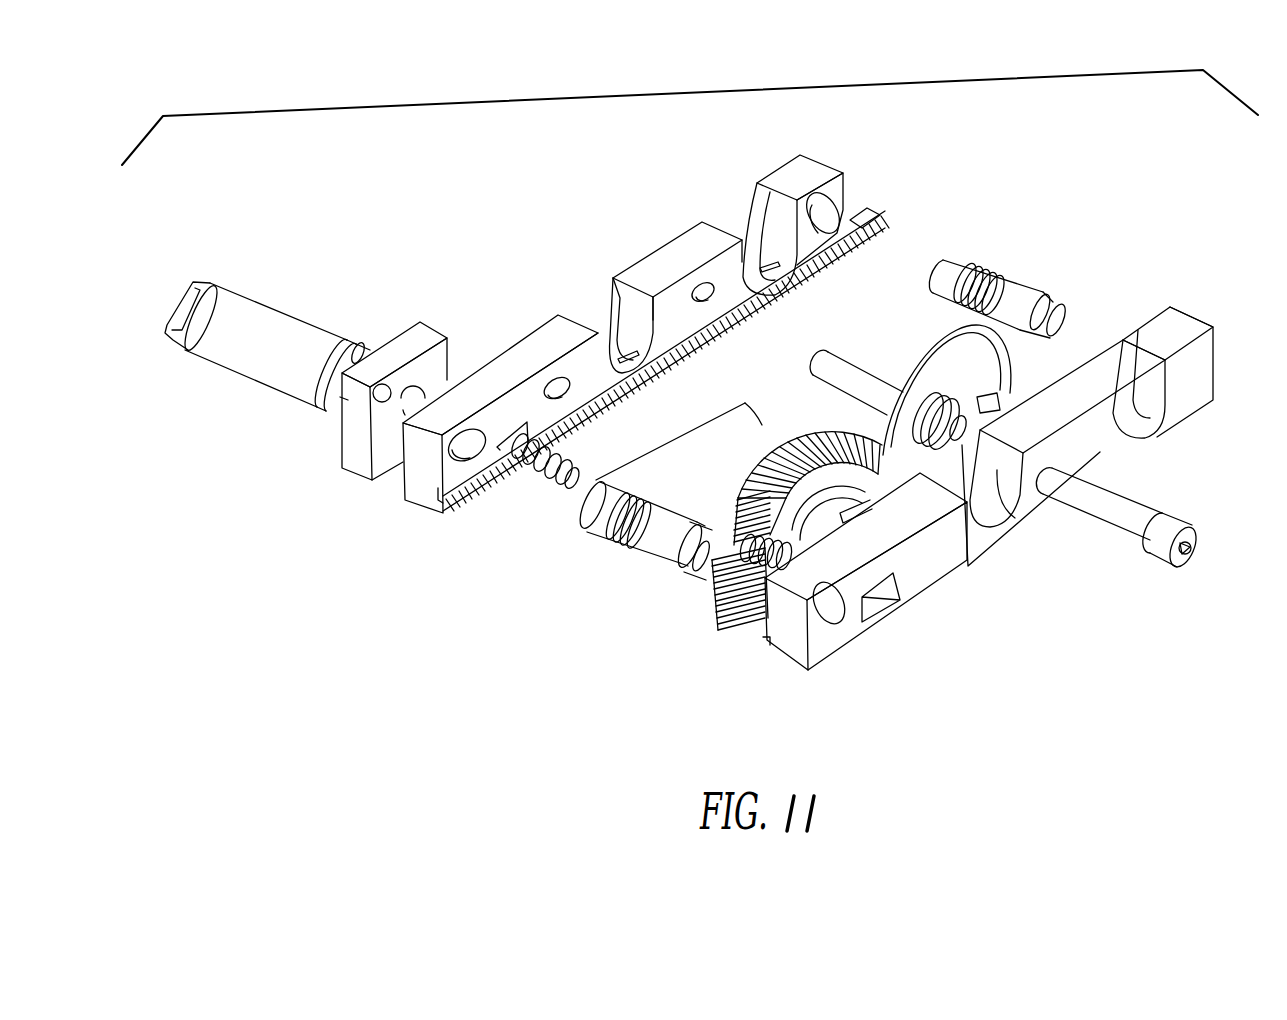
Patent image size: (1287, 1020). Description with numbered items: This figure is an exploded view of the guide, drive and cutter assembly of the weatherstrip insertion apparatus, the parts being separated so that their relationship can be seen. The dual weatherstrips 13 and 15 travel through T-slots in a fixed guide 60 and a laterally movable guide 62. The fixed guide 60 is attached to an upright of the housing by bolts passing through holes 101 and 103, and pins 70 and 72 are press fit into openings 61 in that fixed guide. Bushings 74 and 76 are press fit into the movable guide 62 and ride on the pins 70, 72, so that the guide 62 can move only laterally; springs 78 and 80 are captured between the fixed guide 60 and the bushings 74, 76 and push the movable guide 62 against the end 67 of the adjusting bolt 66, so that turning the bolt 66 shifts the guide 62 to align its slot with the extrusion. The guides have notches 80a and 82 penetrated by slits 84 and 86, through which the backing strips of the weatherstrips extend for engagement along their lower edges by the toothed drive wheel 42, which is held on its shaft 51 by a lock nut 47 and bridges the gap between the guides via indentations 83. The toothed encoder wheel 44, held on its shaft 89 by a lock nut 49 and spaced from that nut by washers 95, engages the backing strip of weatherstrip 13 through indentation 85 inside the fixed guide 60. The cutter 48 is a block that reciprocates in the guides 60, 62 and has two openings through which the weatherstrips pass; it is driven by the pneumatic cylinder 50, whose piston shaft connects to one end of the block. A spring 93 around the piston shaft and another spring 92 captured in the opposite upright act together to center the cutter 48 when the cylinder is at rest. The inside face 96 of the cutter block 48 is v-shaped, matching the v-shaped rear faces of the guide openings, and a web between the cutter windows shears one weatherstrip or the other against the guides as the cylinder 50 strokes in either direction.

The weatherstrip 13 is at (763, 640).
The weatherstrip 15 is at (878, 205).
The drive wheel 42 is at (790, 366).
The encoder wheel 44 is at (993, 353).
The lock nut 47 is at (853, 510).
The cutter 48 is at (643, 480).
The lock nut 49 is at (1007, 393).
The pneumatic cylinder 50 is at (263, 314).
The shaft 51 is at (710, 446).
The fixed guide 60 is at (660, 263).
The openings 61 is at (490, 428).
The laterally movable guide 62 is at (927, 577).
The adjusting bolt 66 is at (1203, 547).
The end of adjustment bolt 67 is at (1047, 480).
The pin 70 is at (600, 523).
The pin 72 is at (950, 267).
The bushing 74 is at (658, 543).
The bushing 76 is at (1020, 290).
The spring 78 is at (632, 548).
The spring 80 is at (987, 267).
The notch 80a is at (620, 297).
The notch 82 is at (777, 197).
The indentations 83 is at (677, 367).
The slit 84 is at (627, 337).
The indentation 85 is at (807, 280).
The slit 86 is at (753, 237).
The shaft 89 is at (843, 353).
The spring 92 is at (790, 553).
The spring 93 is at (552, 488).
The washers 95 is at (923, 383).
The inside face of cutter block 96 is at (717, 580).
The hole 101 is at (556, 372).
The hole 103 is at (717, 333).